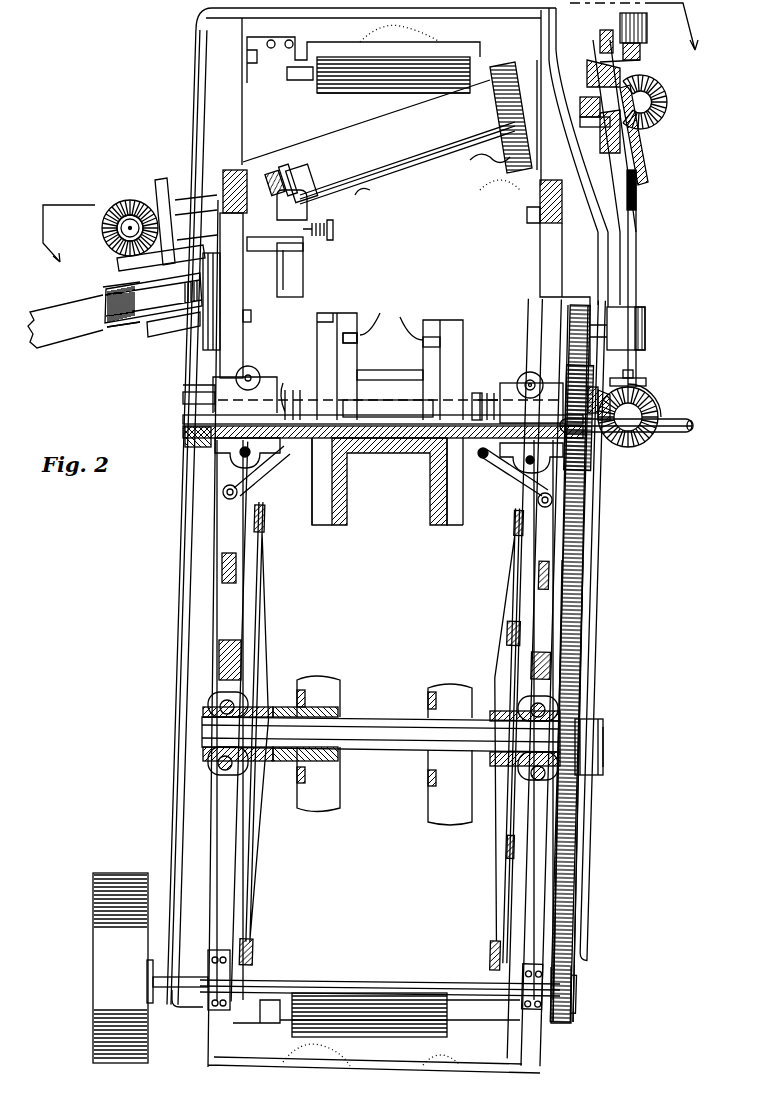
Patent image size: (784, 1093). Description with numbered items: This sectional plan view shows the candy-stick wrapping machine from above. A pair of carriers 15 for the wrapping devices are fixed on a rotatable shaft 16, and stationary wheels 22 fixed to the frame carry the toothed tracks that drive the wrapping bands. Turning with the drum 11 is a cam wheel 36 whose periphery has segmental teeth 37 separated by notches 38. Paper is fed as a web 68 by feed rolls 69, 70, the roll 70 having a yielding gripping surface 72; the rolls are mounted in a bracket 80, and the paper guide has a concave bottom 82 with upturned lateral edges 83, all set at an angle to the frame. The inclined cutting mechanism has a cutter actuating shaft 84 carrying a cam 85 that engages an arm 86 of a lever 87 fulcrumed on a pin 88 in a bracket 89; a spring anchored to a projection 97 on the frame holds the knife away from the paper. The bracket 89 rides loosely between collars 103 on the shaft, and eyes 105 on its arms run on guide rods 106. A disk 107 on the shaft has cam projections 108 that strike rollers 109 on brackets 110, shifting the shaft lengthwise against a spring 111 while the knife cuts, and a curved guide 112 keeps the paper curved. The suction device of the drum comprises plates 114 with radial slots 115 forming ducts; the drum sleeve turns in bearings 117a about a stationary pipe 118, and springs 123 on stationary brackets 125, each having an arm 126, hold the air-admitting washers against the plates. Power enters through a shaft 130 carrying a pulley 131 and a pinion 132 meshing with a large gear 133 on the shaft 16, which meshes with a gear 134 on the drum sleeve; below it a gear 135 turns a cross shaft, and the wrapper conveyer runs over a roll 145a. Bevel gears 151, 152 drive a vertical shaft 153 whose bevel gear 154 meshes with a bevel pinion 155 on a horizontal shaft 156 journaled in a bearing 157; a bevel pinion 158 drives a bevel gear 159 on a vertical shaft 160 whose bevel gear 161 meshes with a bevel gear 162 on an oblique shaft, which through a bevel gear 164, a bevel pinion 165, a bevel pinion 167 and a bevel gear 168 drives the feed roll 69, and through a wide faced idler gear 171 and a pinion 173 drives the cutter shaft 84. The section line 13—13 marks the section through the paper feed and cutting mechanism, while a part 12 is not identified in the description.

The drum 11 is at (383, 373).
The U-shaped bracket 12 is at (423, 507).
The section line 13 is at (375, 144).
The carriers 15 is at (423, 687).
The rotatable shaft 16 is at (390, 757).
The stationary wheels 22 is at (243, 612).
The cam wheel 36 is at (183, 437).
The segmental teeth 37 is at (183, 387).
The notches 38 is at (183, 397).
The web 68 is at (43, 343).
The feed roll 69 is at (110, 292).
The feed roll 70 is at (117, 330).
The gripping surface 72 is at (264, 306).
The bracket 80 is at (153, 340).
The concave bottom 82 is at (258, 313).
The upturned lateral edges 83 is at (258, 290).
The cutter actuating shaft 84 is at (367, 163).
The cam 85 is at (303, 175).
The arm 86 is at (352, 190).
The lever 87 is at (307, 252).
The pin 88 is at (333, 232).
The bracket 89 is at (307, 210).
The projection 97 is at (287, 277).
The collars 103 is at (270, 180).
The eyes 105 is at (290, 180).
The guide rods 106 is at (262, 157).
The disk 107 is at (540, 197).
The cam projections 108 is at (640, 53).
The rollers 109 is at (553, 40).
The brackets 110 is at (640, 157).
The spring 111 is at (500, 157).
The curved guide 112 is at (348, 292).
The plates 114 is at (327, 335).
The radial slots 115 is at (327, 320).
The bearings 117a is at (512, 383).
The stationary conduit or pipe 118 is at (690, 423).
The springs 123 is at (478, 398).
The stationary brackets 125 is at (283, 385).
The arm 126 is at (277, 467).
The shaft 130 is at (363, 990).
The pulley 131 is at (113, 962).
The pinion 132 is at (572, 978).
The large gear 133 is at (575, 880).
The gear 134 is at (585, 500).
The gear 135 is at (590, 373).
The roll 145a is at (347, 38).
The bevel gear 151 is at (600, 460).
The bevel gear 152 is at (637, 452).
The vertical shaft 153 is at (660, 430).
The bevel gear 154 is at (647, 407).
The bevel pinion 155 is at (640, 383).
The horizontal shaft 156 is at (636, 282).
The bearing 157 is at (647, 35).
The bevel pinion 158 is at (662, 73).
The bevel gear 159 is at (668, 95).
The vertical shaft 160 is at (650, 120).
The bevel gear 161 is at (668, 107).
The bevel gear 162 is at (645, 140).
The bevel gear 164 is at (160, 177).
The bevel pinion 165 is at (103, 212).
The bevel pinion 167 is at (130, 197).
The bevel gear 168 is at (115, 263).
The wide faced idler gear 171 is at (470, 100).
The pinion 173 is at (470, 128).